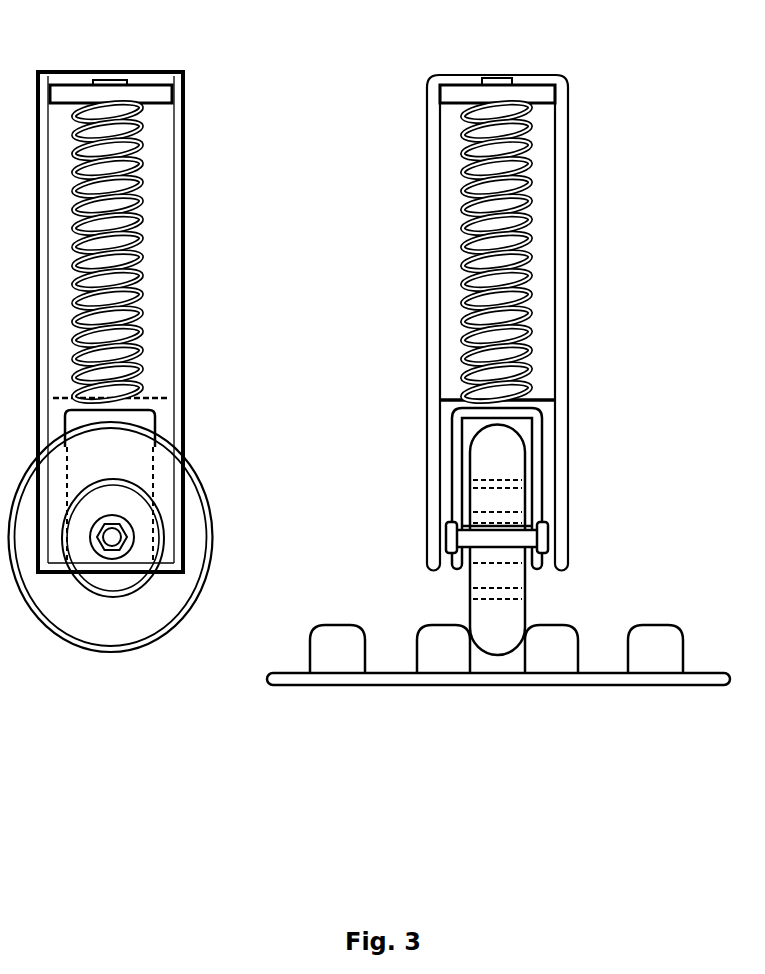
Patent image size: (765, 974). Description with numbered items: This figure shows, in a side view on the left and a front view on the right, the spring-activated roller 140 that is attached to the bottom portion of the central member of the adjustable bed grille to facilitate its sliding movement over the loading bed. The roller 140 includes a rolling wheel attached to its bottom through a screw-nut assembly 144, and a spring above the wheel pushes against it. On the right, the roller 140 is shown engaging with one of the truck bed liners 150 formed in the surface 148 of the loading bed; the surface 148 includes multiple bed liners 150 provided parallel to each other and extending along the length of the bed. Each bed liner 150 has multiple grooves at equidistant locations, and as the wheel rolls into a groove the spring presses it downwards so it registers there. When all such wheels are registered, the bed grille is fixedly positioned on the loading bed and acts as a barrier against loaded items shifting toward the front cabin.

The spring-activated roller 140 is at (185, 102).
The screw-nut assembly 144 is at (122, 520).
The surface of the loading bed 148 is at (346, 682).
The bed liner 150 is at (378, 681).